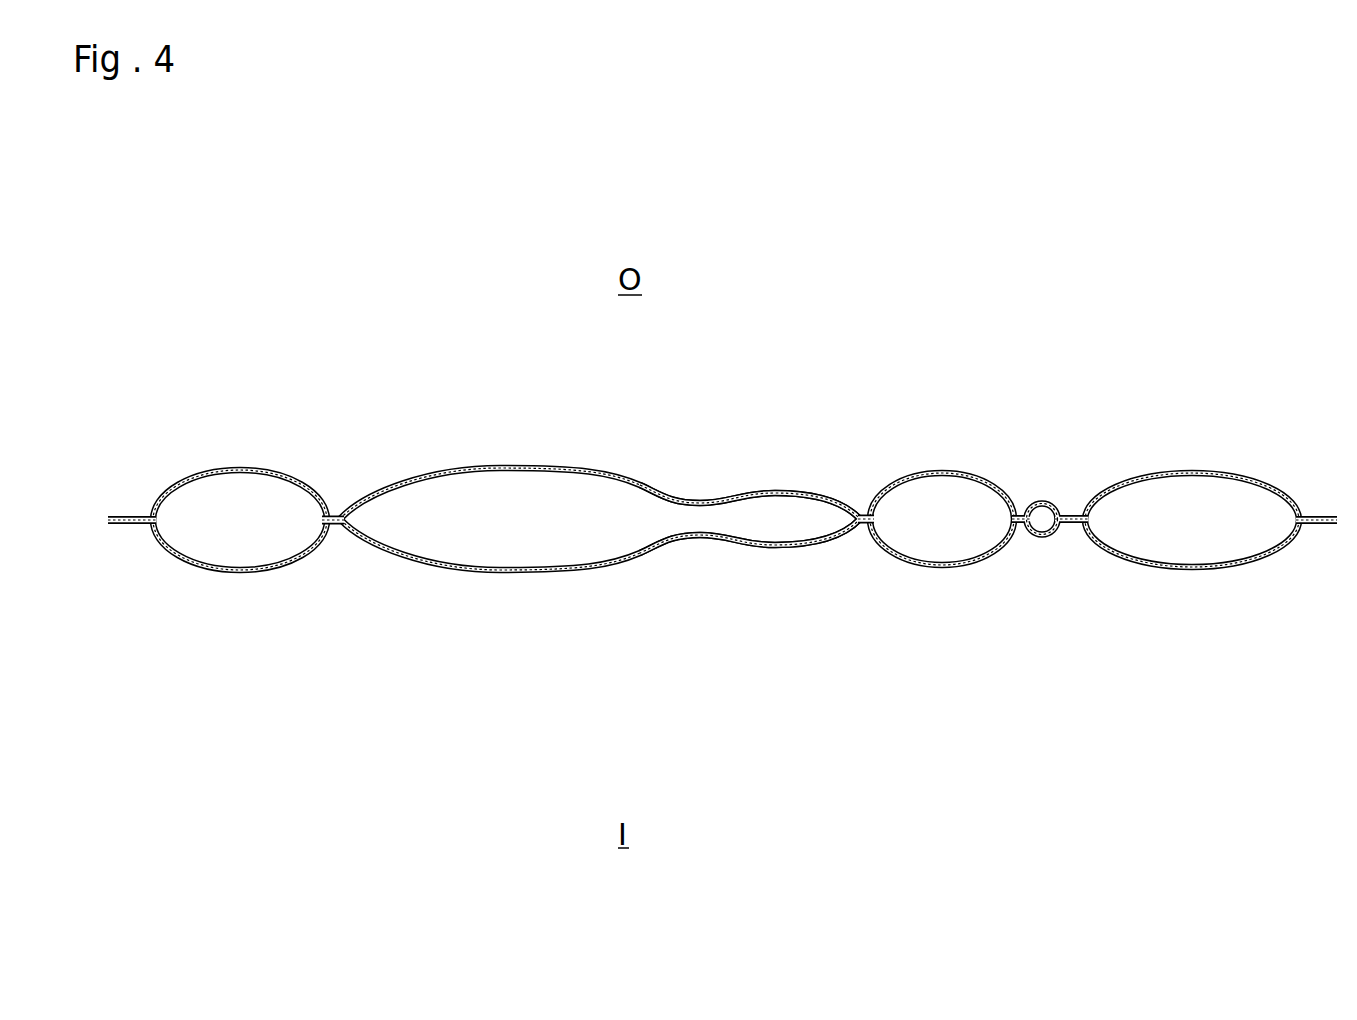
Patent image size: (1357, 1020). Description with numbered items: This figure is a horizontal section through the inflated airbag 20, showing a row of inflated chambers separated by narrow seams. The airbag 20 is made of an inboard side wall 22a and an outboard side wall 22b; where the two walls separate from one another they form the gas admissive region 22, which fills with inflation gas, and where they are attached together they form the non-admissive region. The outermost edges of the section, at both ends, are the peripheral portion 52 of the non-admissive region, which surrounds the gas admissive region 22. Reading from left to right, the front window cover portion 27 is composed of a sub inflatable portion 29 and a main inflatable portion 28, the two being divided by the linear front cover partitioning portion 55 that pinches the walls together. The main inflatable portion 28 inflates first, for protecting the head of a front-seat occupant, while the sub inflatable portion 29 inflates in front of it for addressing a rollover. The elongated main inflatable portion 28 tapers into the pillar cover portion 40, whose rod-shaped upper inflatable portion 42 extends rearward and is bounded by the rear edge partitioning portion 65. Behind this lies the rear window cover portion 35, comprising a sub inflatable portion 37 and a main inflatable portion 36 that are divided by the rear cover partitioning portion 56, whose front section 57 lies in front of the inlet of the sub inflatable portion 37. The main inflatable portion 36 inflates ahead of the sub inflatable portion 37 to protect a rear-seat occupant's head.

The airbag 20 is at (510, 297).
The gas admissive region 22 is at (223, 502).
The inboard side wall 22a is at (173, 557).
The outboard side wall 22b is at (242, 468).
The peripheral portion 52 is at (128, 514).
The front cover partitioning portion 55 is at (330, 512).
The front window cover portion 27 is at (435, 723).
The main inflatable portion 28 is at (448, 543).
The sub inflatable portion 29 is at (253, 547).
The pillar cover portion 40 is at (775, 523).
The upper inflatable portion 42 is at (775, 523).
The rear edge partitioning portion 65 is at (865, 513).
The front section 57 is at (1020, 513).
The rear cover partitioning portion 56 is at (1020, 513).
The sub inflatable portion 37 is at (958, 547).
The main inflatable portion 36 is at (1153, 542).
The rear window cover portion 35 is at (1142, 725).